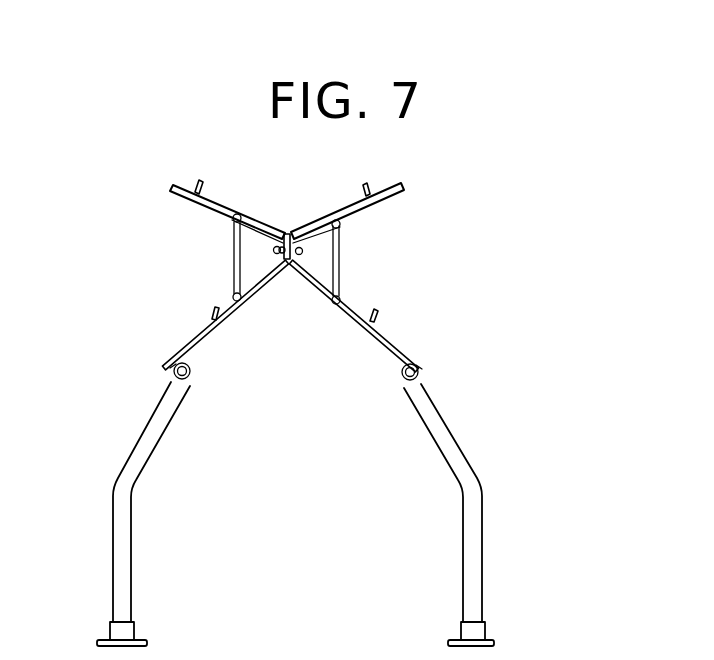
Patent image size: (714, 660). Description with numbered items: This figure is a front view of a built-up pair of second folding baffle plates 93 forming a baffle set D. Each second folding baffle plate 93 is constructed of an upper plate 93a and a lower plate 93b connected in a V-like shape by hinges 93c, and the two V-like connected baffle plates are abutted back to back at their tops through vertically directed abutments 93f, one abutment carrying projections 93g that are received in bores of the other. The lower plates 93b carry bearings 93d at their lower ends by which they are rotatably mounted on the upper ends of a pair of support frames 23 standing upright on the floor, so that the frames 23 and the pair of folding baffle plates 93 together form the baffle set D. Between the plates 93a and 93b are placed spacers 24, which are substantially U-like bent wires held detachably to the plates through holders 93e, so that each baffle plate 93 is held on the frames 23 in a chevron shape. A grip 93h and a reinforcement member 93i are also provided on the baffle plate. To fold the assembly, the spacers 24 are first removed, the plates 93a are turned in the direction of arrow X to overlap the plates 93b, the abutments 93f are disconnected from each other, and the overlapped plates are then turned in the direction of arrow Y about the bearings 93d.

The second folding baffle plate 93 is at (319, 390).
The upper plate 93a is at (316, 236).
The lower plate 93b is at (340, 300).
The hinge 93c is at (309, 257).
The bearing 93d is at (183, 380).
The holder 93e is at (231, 218).
The abutment 93f is at (340, 227).
The projection 93g is at (280, 245).
The grip 93h is at (200, 182).
The reinforcement member 93i is at (217, 326).
The spacer 24 is at (339, 272).
The support frame 23 is at (122, 567).
The arrow X direction X is at (162, 218).
The arrow Y direction Y is at (258, 360).
The baffle set D is at (440, 330).